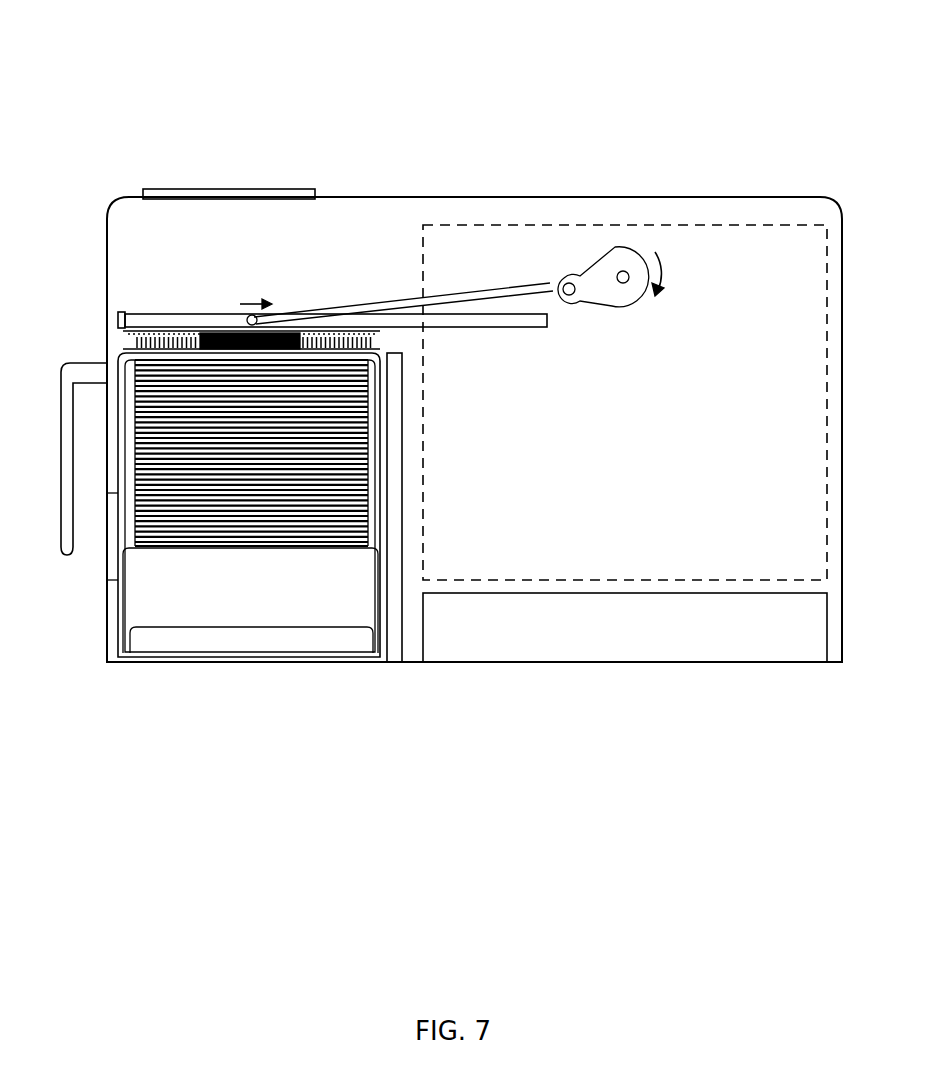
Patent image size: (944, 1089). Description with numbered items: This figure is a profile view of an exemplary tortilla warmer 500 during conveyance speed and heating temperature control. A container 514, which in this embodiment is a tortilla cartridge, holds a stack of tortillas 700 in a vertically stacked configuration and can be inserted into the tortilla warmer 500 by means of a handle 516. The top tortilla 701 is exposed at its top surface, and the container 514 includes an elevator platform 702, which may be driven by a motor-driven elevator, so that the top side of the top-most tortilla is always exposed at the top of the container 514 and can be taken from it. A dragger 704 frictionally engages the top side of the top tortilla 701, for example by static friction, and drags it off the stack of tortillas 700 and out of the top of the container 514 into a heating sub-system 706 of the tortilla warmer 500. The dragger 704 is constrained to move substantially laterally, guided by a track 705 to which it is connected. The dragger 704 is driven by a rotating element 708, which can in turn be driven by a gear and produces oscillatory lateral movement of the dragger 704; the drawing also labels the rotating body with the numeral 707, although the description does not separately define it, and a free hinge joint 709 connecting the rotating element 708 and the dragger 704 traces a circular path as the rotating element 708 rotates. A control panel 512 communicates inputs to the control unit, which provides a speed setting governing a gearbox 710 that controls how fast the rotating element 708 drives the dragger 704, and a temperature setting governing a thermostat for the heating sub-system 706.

The tortilla warmer 500 is at (522, 140).
The control panel 512 is at (204, 186).
The container 514 is at (107, 583).
The handle 516 is at (61, 458).
The stack of tortillas 700 is at (133, 472).
The top tortilla 701 is at (134, 344).
The elevator platform 702 is at (250, 600).
The dragger 704 is at (553, 283).
The track 705 is at (160, 312).
The heating sub-system 706 is at (643, 225).
The cam 707 is at (625, 305).
The rotating element 708 is at (618, 272).
The free hinge joint 709 is at (577, 295).
The gearbox 710 is at (745, 636).